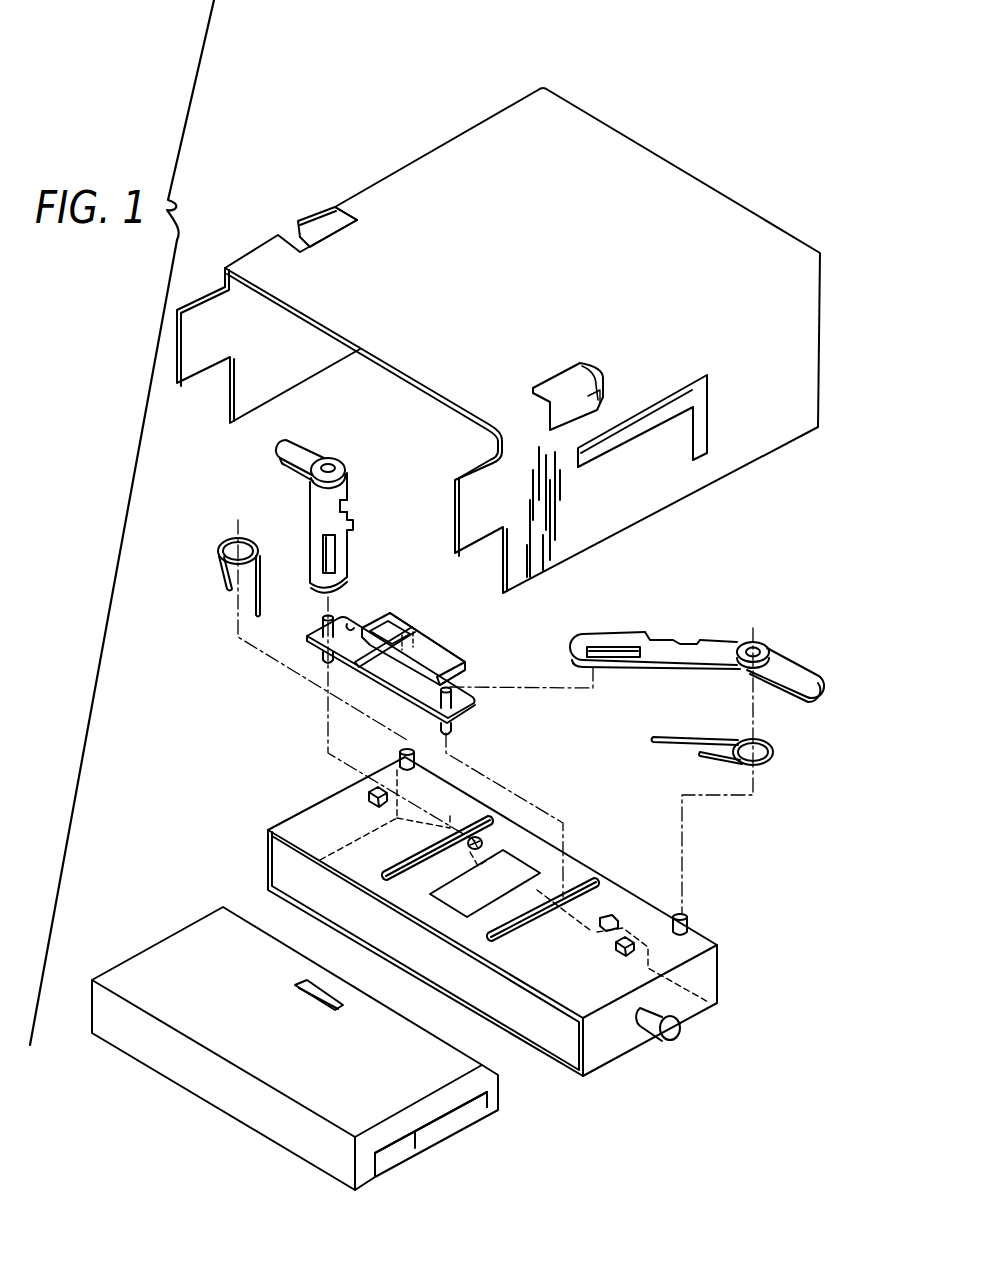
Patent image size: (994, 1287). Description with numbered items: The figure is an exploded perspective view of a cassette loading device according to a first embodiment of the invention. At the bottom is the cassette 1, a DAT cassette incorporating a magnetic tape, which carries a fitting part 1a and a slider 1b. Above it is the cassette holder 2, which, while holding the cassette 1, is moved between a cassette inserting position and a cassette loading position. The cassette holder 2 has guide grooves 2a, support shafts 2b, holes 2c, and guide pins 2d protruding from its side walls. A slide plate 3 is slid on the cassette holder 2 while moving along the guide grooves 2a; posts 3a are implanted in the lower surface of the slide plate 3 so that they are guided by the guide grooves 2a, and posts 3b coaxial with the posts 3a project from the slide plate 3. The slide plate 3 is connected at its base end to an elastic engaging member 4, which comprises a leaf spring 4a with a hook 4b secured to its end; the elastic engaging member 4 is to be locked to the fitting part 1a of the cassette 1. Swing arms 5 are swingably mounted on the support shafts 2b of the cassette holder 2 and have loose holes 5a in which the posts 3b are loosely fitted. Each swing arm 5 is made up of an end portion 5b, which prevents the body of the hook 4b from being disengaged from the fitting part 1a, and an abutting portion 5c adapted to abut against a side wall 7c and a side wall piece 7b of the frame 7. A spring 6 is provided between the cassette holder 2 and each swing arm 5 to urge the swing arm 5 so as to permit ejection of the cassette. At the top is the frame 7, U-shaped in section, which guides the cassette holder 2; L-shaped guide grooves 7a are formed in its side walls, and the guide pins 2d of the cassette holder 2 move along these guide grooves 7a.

The cassette 1 is at (313, 1023).
The fitting part 1a is at (318, 998).
The slider 1b is at (468, 1110).
The cassette holder 2 is at (517, 911).
The guide grooves 2a is at (450, 842).
The support shafts 2b is at (400, 766).
The hole 2c is at (483, 850).
The guide pins 2d is at (679, 1022).
The slide plate 3 is at (387, 690).
The posts 3a is at (322, 658).
The posts 3b is at (322, 628).
The elastic engaging member 4 is at (442, 626).
The leaf spring 4a is at (402, 648).
The hook 4b is at (462, 662).
The swing arms 5 is at (519, 568).
The loose holes 5a is at (343, 542).
The end portion 5b is at (347, 572).
The abutting portion 5c is at (298, 448).
The spring 6 is at (218, 548).
The frame 7 is at (710, 222).
The guide grooves 7a is at (713, 430).
The side wall piece 7b is at (312, 228).
The side wall 7c is at (320, 350).